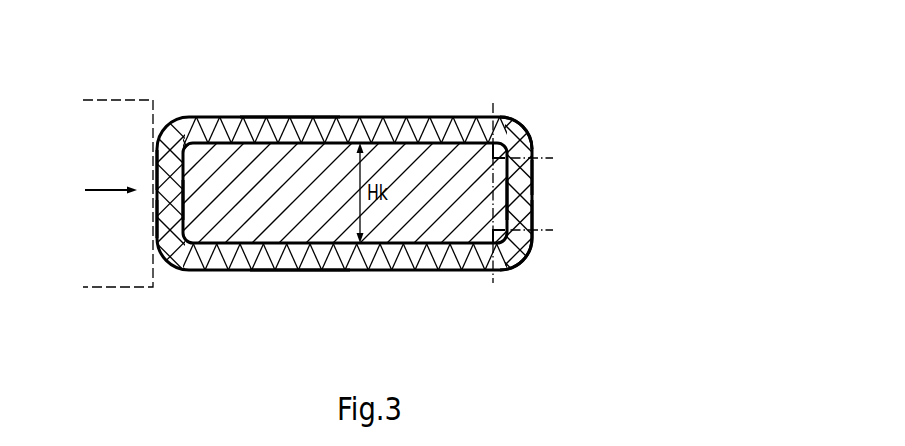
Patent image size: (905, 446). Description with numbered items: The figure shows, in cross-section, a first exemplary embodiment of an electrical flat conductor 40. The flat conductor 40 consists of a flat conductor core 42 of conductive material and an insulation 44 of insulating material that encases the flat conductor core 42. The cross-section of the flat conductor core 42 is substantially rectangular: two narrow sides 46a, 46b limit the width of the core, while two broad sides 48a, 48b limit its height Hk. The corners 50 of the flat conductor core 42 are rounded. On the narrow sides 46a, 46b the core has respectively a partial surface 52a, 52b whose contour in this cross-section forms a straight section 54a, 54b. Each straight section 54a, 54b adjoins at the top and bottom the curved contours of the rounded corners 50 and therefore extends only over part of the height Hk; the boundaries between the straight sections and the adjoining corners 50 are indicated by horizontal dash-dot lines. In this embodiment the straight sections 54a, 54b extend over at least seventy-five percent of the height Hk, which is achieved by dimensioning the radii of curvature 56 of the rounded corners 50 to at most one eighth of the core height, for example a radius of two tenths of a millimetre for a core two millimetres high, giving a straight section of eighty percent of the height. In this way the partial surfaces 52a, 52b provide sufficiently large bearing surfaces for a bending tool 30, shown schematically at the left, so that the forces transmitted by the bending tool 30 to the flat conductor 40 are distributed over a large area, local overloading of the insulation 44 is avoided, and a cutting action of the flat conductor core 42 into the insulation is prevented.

The bending tool 30 is at (130, 288).
The flat conductor 40 is at (538, 54).
The flat conductor core 42 is at (428, 167).
The insulation 44 is at (383, 133).
The narrow side 46a is at (528, 214).
The narrow side 46b is at (160, 218).
The broad side 48a is at (290, 140).
The broad side 48b is at (298, 247).
The corners 50 is at (525, 253).
The partial surface 52a is at (522, 201).
The partial surface 52b is at (161, 203).
The straight section 54a is at (522, 183).
The straight section 54b is at (160, 163).
The radius of curvature 56 is at (509, 136).